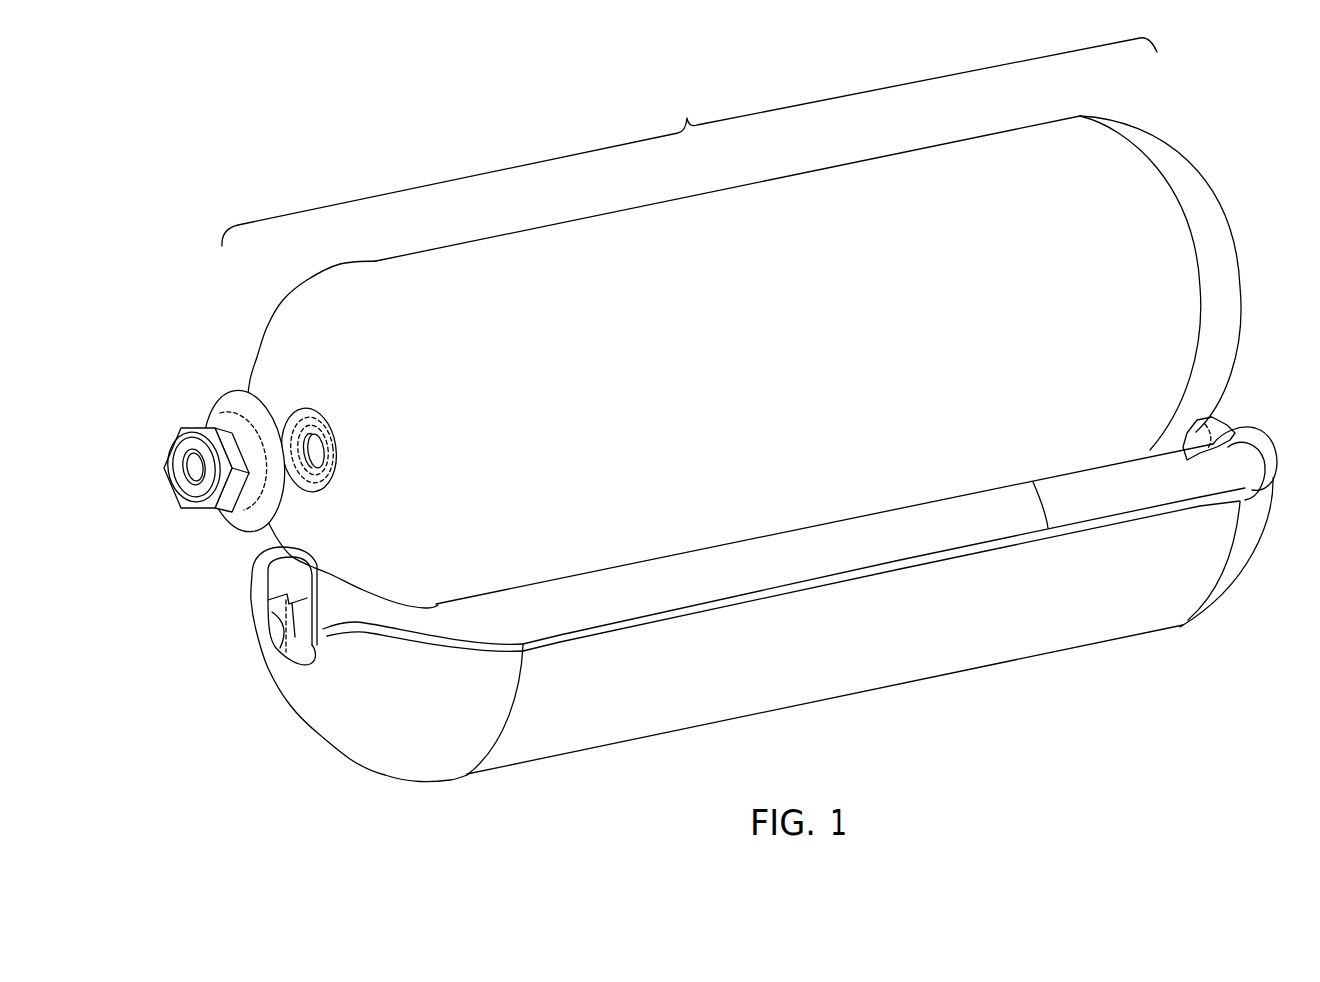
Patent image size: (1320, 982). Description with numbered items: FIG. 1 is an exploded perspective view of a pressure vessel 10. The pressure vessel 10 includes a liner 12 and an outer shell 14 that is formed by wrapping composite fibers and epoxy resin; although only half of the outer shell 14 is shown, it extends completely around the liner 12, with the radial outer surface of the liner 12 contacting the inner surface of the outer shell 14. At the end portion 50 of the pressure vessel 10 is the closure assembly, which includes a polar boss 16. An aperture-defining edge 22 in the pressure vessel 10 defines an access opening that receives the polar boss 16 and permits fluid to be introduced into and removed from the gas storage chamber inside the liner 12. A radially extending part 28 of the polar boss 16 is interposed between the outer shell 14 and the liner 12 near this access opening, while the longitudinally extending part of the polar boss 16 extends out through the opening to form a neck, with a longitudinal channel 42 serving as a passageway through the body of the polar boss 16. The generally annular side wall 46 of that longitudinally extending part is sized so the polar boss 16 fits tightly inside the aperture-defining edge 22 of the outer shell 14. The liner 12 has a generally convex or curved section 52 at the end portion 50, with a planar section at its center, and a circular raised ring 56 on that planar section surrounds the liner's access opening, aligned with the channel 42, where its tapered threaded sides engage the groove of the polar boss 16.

The pressure vessel 10 is at (690, 114).
The liner 12 is at (709, 362).
The outer shell 14 is at (742, 599).
The polar boss 16 is at (238, 483).
The aperture-defining edge 22 is at (278, 637).
The radially extending part 28 is at (279, 495).
The longitudinal channel 42 is at (190, 470).
The annular side wall 46 is at (184, 438).
The end portion 50 is at (307, 434).
The convex section 52 is at (413, 448).
The raised ring 56 is at (312, 412).